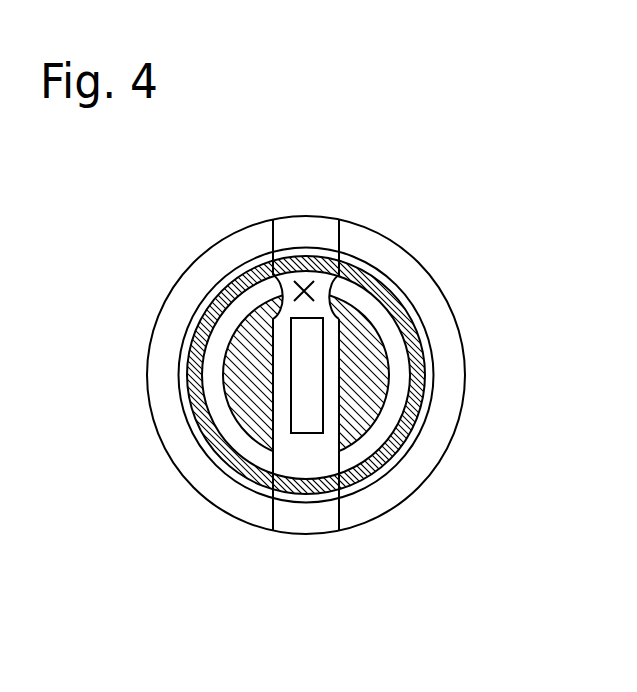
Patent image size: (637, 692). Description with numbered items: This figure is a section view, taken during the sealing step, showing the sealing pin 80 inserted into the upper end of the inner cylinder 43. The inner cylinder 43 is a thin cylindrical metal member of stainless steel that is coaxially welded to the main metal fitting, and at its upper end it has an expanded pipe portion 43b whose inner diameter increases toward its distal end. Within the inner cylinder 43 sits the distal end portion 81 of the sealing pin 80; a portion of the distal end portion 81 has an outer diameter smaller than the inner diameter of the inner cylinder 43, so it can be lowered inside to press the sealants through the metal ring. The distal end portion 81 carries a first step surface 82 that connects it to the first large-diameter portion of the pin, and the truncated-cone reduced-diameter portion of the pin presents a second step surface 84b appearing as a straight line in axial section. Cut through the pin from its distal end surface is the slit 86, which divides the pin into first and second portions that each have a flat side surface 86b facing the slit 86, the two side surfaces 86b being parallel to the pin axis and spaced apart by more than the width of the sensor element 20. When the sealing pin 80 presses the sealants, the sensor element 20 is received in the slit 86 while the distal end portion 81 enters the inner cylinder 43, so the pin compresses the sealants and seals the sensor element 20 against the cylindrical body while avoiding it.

The sealing pin 80 is at (407, 164).
The distal end portion 81 is at (253, 345).
The first step surface 82 is at (397, 370).
The second step surface 84b is at (178, 323).
The slit 86 is at (300, 275).
The side surface 86b is at (280, 285).
The inner cylinder 43 is at (240, 465).
The expanded pipe portion 43b is at (202, 453).
The sensor element 20 is at (307, 417).